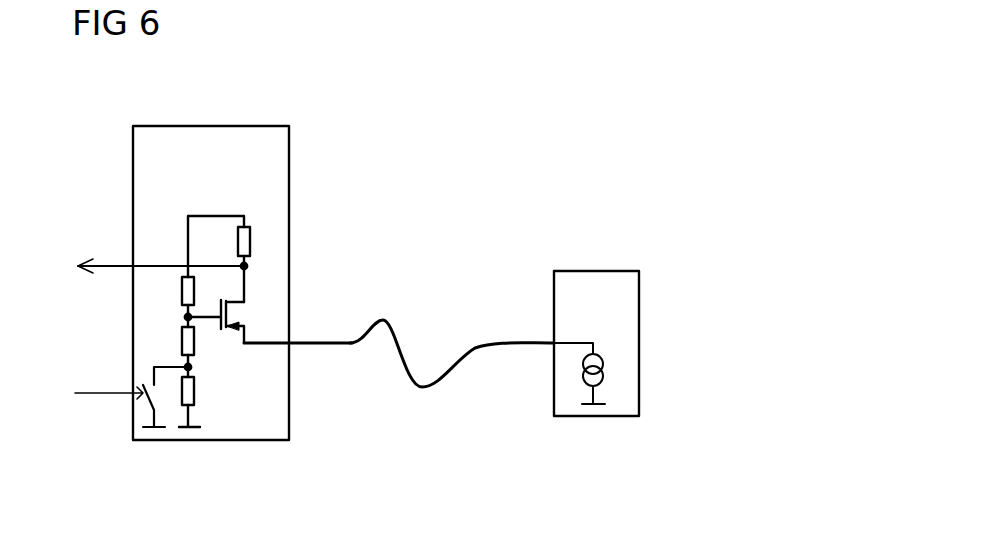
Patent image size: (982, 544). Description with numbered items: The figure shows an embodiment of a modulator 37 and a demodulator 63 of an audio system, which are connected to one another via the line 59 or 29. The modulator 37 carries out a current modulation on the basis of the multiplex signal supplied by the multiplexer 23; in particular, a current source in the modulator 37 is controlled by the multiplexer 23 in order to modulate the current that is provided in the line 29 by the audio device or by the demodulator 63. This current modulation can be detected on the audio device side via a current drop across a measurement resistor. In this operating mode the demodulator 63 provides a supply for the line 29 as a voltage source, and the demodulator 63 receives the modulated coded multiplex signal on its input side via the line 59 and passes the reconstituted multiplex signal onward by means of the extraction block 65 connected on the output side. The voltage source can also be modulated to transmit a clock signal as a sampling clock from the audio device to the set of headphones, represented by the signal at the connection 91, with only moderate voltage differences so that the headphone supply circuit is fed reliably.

The demodulator 63 is at (289, 172).
The extraction block 65 is at (144, 266).
The connection 91 is at (137, 399).
The line 59 is at (318, 343).
The line 29 is at (530, 338).
The modulator 37 is at (639, 293).
The multiplexer 23 is at (603, 370).